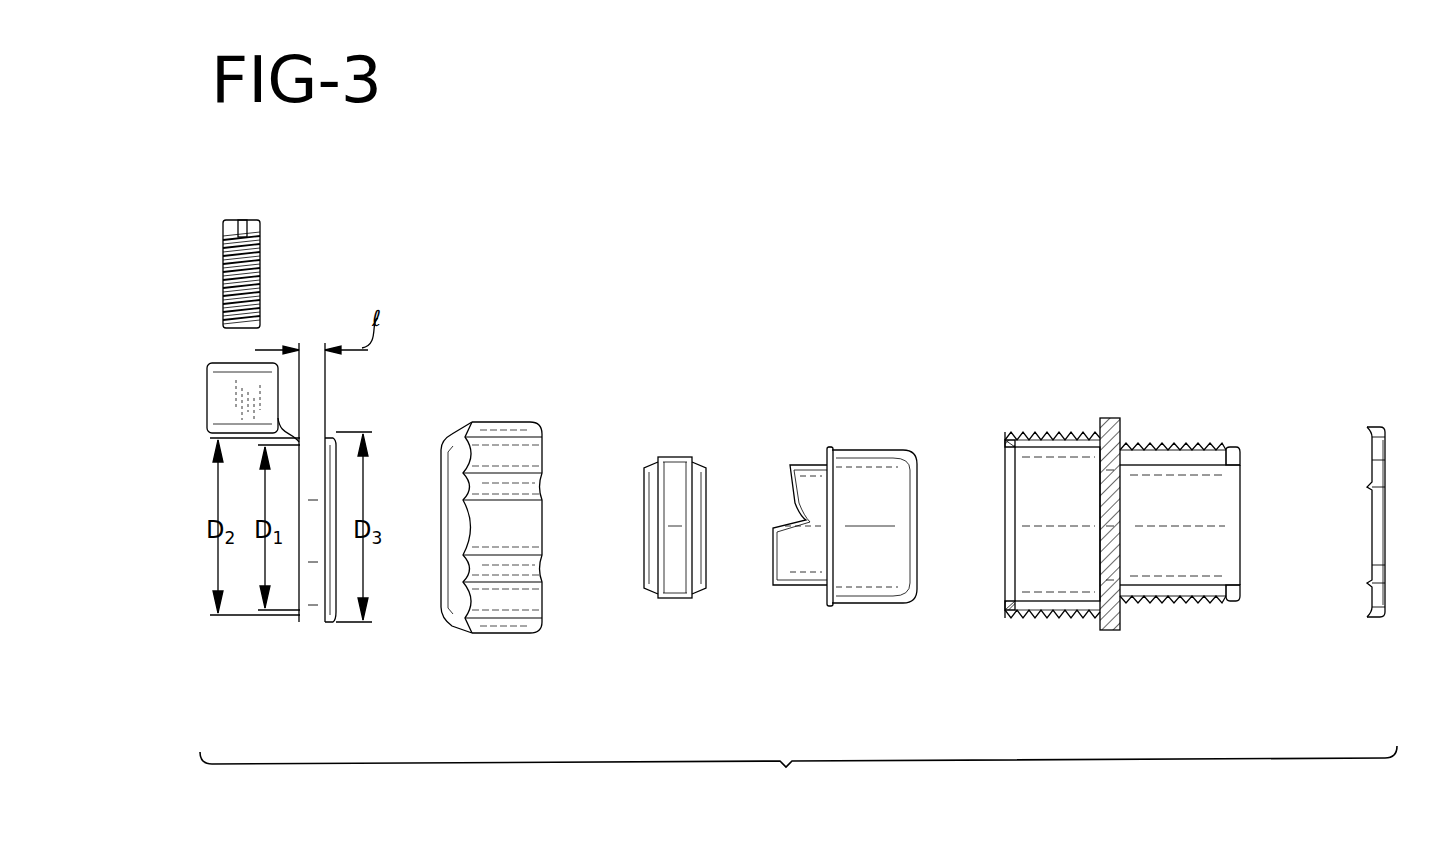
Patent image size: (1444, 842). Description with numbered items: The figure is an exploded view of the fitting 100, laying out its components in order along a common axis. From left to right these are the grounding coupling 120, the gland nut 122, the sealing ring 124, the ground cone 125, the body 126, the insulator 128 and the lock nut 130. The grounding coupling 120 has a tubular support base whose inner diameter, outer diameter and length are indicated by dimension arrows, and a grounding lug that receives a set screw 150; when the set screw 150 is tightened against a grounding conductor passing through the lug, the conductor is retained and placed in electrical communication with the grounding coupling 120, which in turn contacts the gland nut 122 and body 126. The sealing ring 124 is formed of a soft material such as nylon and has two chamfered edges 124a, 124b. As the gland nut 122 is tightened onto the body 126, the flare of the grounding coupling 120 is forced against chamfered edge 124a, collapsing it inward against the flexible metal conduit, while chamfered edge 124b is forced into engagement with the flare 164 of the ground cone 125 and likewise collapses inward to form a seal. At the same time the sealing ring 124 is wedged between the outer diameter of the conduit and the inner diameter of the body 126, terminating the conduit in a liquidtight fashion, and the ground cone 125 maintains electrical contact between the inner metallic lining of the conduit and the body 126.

The fitting 100 is at (798, 778).
The grounding coupling 120 is at (321, 655).
The gland nut 122 is at (486, 636).
The sealing ring 124 is at (678, 557).
The chamfered edge 124a is at (652, 461).
The chamfered edge 124b is at (728, 442).
The ground cone 125 is at (845, 530).
The body 126 is at (1131, 574).
The insulator 128 is at (1240, 603).
The lock nut 130 is at (1388, 600).
The set screw 150 is at (262, 224).
The flare 164 is at (825, 446).